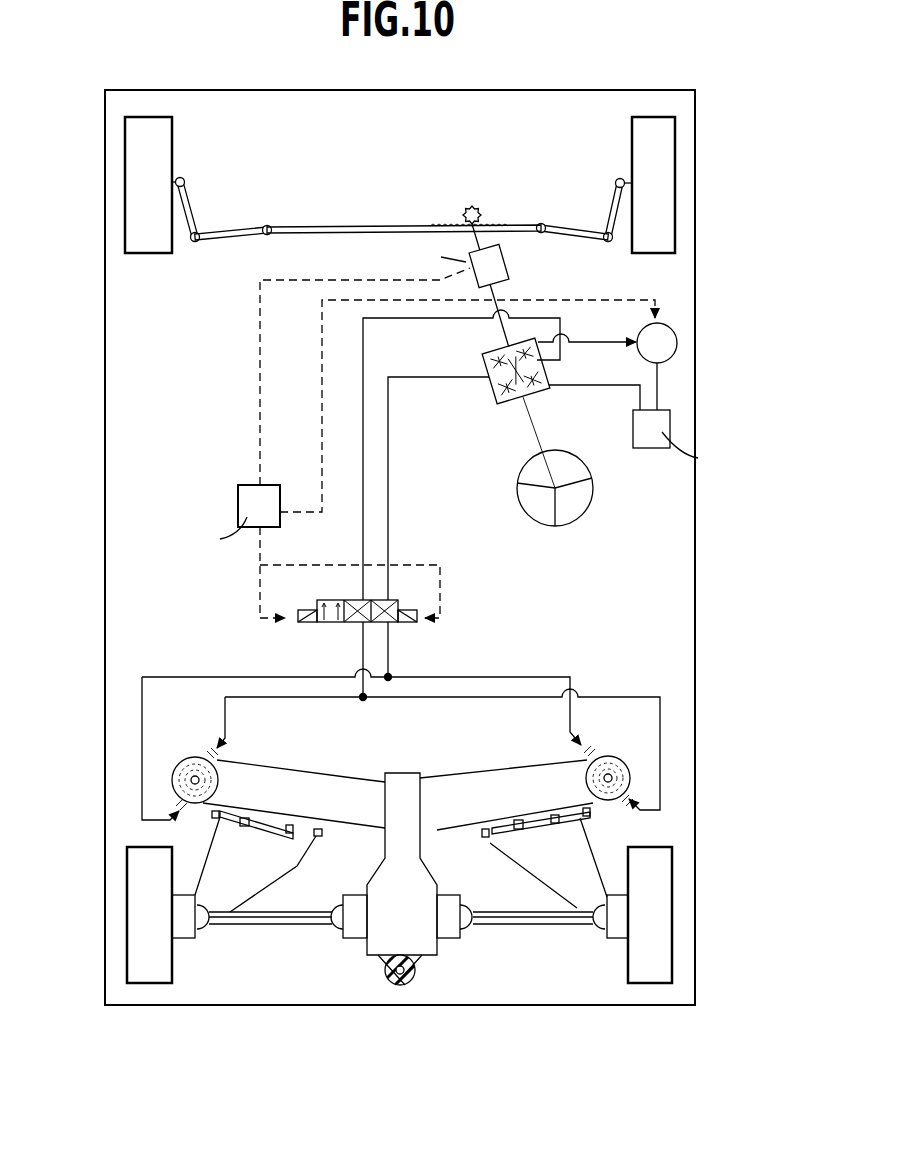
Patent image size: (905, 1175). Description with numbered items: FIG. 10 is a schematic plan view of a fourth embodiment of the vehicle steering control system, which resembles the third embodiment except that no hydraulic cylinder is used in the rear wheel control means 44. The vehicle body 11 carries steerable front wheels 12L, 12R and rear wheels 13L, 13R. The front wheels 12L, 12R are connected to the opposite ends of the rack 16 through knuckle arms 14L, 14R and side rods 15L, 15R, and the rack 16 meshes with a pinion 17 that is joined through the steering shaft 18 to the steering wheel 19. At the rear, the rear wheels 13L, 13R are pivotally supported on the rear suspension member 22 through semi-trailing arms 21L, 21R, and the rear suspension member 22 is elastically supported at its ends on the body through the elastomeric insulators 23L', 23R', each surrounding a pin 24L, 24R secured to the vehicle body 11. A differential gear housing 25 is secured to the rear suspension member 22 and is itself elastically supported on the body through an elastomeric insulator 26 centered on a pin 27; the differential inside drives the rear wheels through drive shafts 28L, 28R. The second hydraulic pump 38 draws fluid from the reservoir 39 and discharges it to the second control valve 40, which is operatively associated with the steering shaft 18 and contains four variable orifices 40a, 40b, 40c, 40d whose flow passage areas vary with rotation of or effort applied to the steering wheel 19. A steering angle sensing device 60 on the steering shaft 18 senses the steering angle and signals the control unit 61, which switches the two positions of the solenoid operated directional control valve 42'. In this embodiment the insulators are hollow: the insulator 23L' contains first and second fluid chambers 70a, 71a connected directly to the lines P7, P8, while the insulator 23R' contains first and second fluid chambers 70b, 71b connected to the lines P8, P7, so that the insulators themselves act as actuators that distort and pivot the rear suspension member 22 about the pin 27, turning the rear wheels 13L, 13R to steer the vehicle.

The vehicle body 11 is at (290, 89).
The steerable front wheel 12L is at (160, 122).
The steerable front wheel 12R is at (660, 122).
The rear wheel 13L is at (155, 977).
The rear wheel 13R is at (657, 977).
The knuckle arm 14L is at (190, 193).
The knuckle arm 14R is at (613, 197).
The side rod 15L is at (243, 227).
The side rod 15R is at (563, 225).
The rack 16 is at (335, 225).
The pinion 17 is at (471, 206).
The steering shaft 18 is at (500, 290).
The steering wheel 19 is at (590, 498).
The semi-trailing arm 21L is at (283, 857).
The semi-trailing arm 21R is at (538, 865).
The rear suspension member 22 is at (320, 786).
The elastomeric insulator 23L' is at (116, 756).
The elastomeric insulator 23R' is at (688, 740).
The pin 24L is at (194, 776).
The pin 24R is at (618, 776).
The differential gear housing 25 is at (410, 782).
The elastomeric insulator 26 is at (398, 983).
The pin 27 is at (403, 983).
The drive shaft 28L is at (277, 927).
The drive shaft 28R is at (557, 927).
The second hydraulic pump 38 is at (678, 342).
The reservoir 39 is at (658, 450).
The second control valve 40 is at (503, 408).
The variable orifice 40a is at (490, 355).
The variable orifice 40b is at (500, 388).
The variable orifice 40c is at (543, 340).
The variable orifice 40d is at (535, 387).
The solenoid operated directional control valve 42' is at (347, 631).
The rear wheel control means 44 is at (219, 664).
The steering angle sensing device 60 is at (510, 268).
The control unit 61 is at (238, 507).
The first fluid chamber 70a is at (220, 770).
The first fluid chamber 70b is at (607, 760).
The second fluid chamber 71a is at (177, 788).
The second fluid chamber 71b is at (612, 793).
The hydraulic line P7 is at (364, 522).
The hydraulic line P8 is at (389, 436).